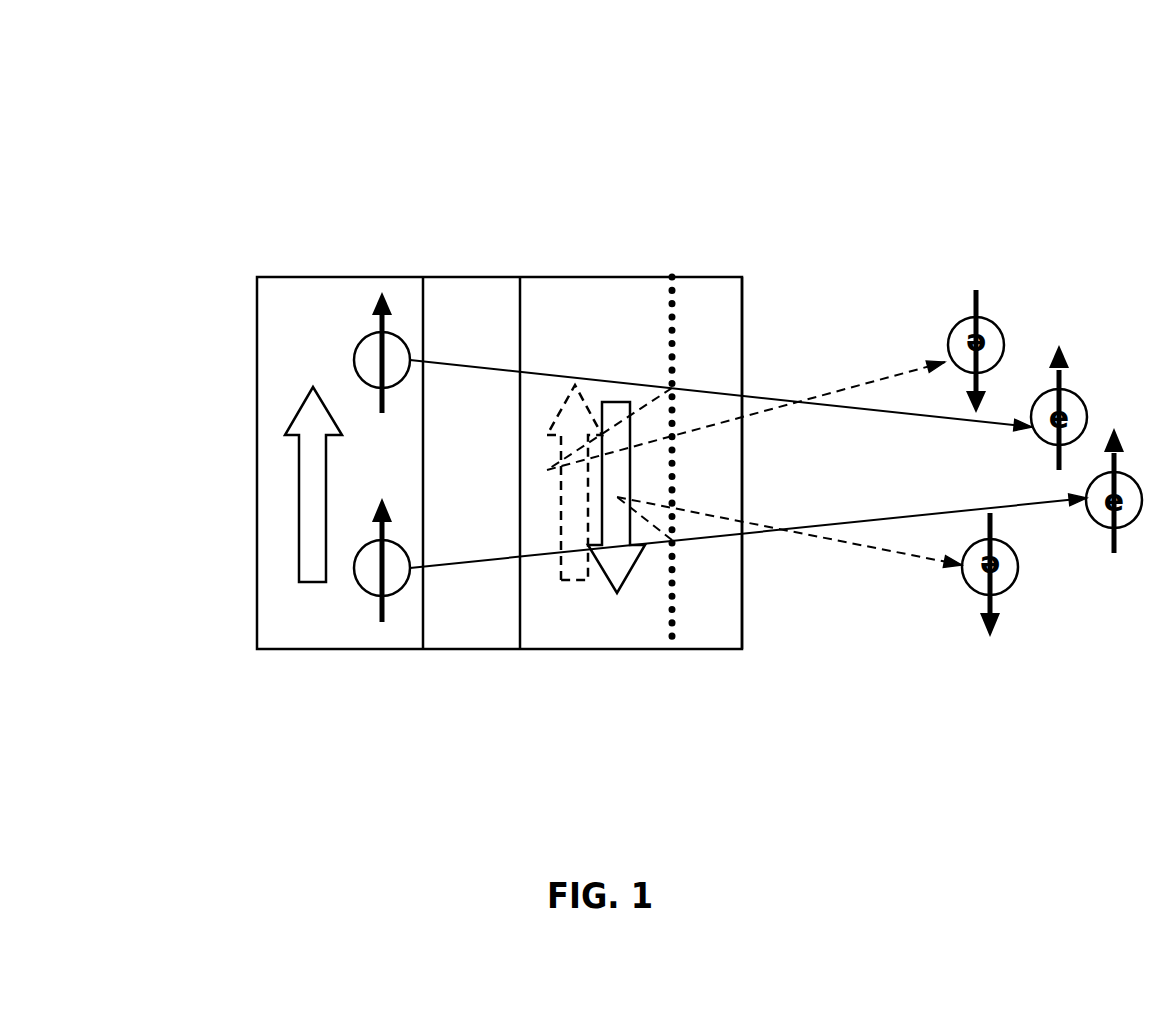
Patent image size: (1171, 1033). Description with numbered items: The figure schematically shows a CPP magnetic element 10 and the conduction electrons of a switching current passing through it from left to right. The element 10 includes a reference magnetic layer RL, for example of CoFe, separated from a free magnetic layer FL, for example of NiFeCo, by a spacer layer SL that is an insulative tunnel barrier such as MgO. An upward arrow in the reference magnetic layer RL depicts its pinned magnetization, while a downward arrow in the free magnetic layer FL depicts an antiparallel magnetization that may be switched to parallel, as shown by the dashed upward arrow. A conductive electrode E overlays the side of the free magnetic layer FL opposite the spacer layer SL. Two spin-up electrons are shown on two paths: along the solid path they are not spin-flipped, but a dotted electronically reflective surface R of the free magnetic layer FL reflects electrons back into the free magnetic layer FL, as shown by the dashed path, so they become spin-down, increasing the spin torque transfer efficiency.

The CPP magnetic element 10 is at (253, 138).
The reference magnetic layer RL is at (280, 290).
The spacer layer SL is at (473, 290).
The free magnetic layer FL is at (600, 288).
The electrode E is at (722, 288).
The electronically reflective surface R is at (672, 620).